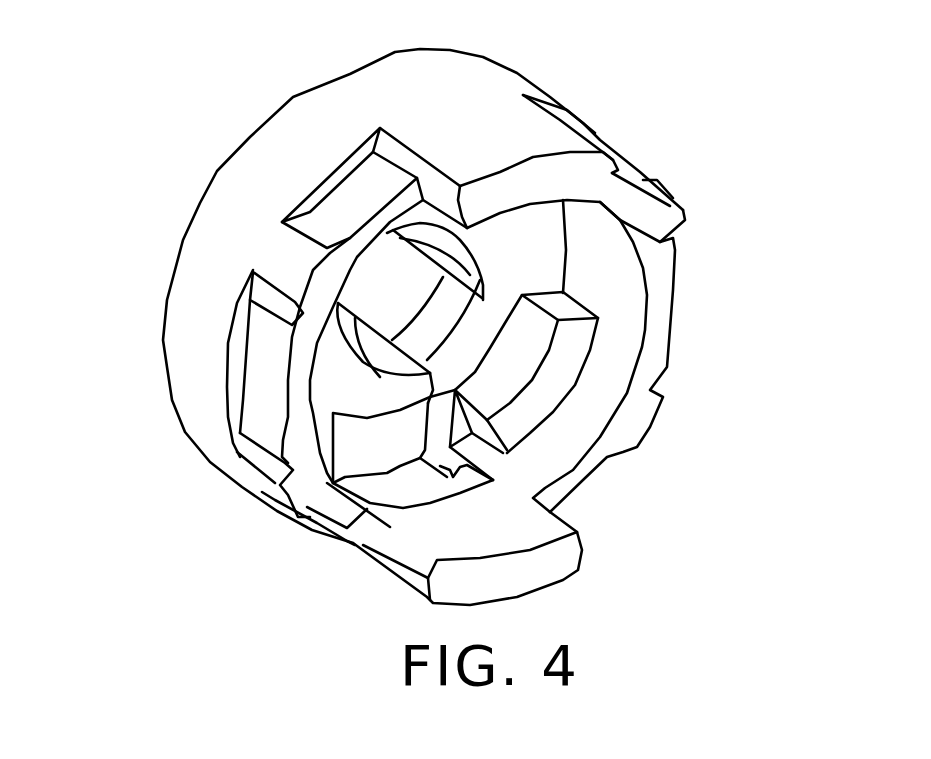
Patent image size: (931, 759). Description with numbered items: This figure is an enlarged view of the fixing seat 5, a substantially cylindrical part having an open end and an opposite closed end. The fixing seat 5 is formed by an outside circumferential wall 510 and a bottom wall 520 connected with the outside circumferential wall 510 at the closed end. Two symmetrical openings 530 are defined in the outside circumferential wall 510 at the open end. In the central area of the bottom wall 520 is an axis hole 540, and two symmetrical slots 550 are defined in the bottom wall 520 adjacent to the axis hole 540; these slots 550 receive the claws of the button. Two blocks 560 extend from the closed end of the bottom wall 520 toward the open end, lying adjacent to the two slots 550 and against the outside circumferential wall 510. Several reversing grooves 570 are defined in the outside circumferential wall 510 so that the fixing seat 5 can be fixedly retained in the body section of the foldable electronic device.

The fixing seat 5 is at (651, 124).
The outside circumferential wall 510 is at (327, 122).
The bottom wall 520 is at (395, 53).
The openings 530 is at (327, 275).
The axis hole 540 is at (392, 293).
The slots 550 is at (367, 442).
The blocks 560 is at (568, 340).
The reversing grooves 570 is at (620, 175).